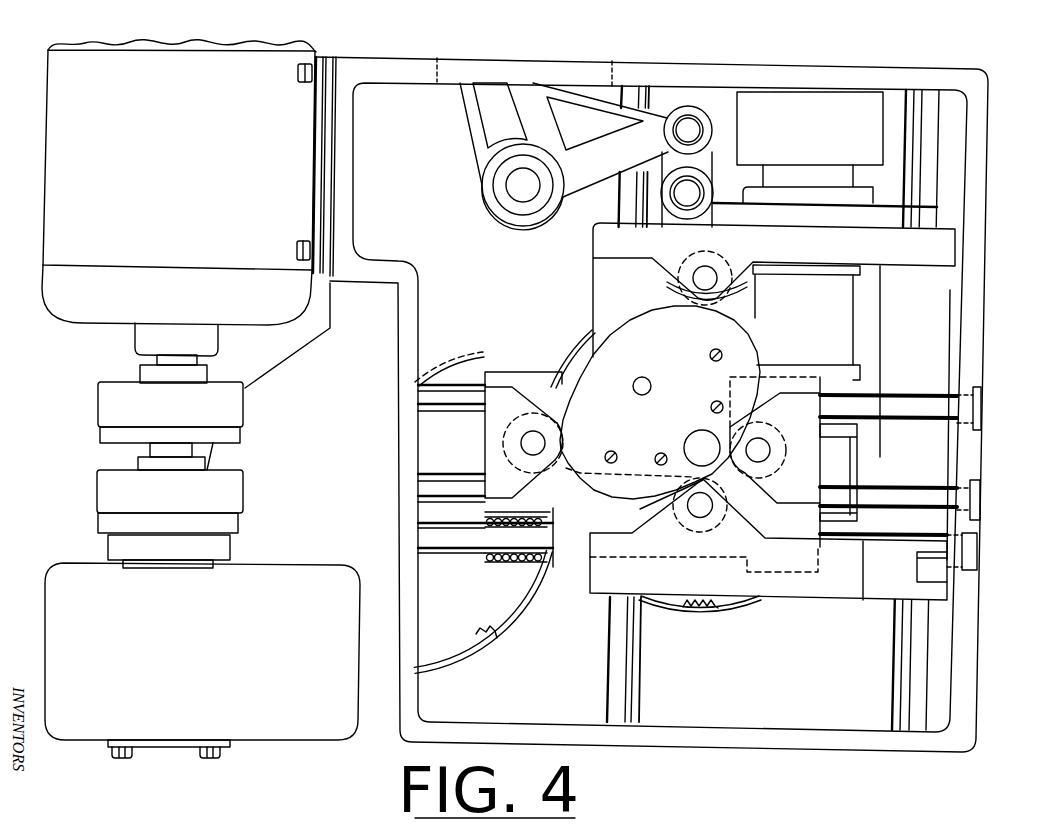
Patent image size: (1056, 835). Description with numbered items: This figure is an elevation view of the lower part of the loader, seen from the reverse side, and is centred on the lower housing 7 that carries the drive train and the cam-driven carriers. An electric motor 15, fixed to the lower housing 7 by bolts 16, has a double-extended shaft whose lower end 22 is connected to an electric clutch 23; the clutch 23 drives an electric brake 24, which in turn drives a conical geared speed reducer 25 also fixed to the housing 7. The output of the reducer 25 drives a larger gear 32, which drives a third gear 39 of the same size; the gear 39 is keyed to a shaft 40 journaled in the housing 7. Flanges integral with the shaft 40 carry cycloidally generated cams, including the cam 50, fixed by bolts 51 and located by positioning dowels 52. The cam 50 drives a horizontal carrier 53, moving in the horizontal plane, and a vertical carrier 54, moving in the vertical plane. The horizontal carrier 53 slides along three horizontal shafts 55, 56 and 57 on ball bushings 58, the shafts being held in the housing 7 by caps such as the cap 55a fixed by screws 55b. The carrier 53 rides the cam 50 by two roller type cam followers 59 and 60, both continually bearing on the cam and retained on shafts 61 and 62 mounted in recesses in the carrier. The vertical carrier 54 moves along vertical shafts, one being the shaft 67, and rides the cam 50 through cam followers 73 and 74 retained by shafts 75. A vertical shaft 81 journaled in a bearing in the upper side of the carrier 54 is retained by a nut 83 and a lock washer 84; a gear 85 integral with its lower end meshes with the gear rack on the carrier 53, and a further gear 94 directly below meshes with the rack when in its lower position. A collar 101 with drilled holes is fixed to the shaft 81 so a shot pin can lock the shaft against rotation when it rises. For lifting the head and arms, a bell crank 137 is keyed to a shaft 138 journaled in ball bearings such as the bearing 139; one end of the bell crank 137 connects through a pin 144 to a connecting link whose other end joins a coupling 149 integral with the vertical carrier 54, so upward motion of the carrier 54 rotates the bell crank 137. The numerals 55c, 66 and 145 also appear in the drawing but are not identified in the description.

The lower housing 7 is at (780, 730).
The electric motor 15 is at (181, 170).
The bolts 16 is at (297, 73).
The lower end of motor shaft 22 is at (200, 360).
The electric clutch 23 is at (110, 382).
The electric brake 24 is at (245, 490).
The conical geared speed reducer 25 is at (179, 655).
The larger gear 32 is at (492, 640).
The third gear 39 is at (686, 606).
The shaft 40 is at (689, 437).
The cycloidally generated cam 50 is at (760, 348).
The bolts 51 is at (659, 456).
The positioning dowels 52 is at (649, 382).
The horizontal carrier 53 is at (502, 372).
The vertical carrier 54 is at (593, 259).
The horizontal shaft 55 is at (902, 392).
The cap 55a is at (982, 428).
The screws 55b is at (982, 506).
The rod bracket 55c is at (977, 553).
The horizontal shaft 56 is at (901, 490).
The horizontal shaft 57 is at (938, 531).
The ball bushings 58 is at (484, 556).
The roller type cam follower 59 is at (760, 413).
The roller type cam follower 60 is at (556, 418).
The shaft 61 is at (763, 452).
The shaft 62 is at (529, 436).
The frame column 66 is at (948, 233).
The vertical shaft 67 is at (618, 100).
The cam follower 73 is at (768, 539).
The cam follower 74 is at (718, 302).
The shafts 75 is at (708, 271).
The vertical shaft 81 is at (855, 322).
The nut 83 is at (833, 187).
The lock washer 84 is at (887, 190).
The gear 85 is at (862, 380).
The gear 94 is at (857, 455).
The collar 101 is at (821, 131).
The bell crank 137 is at (467, 122).
The shaft 138 is at (522, 203).
The ball bearing 139 is at (500, 196).
The pin 144 is at (742, 141).
The bushing 145 is at (742, 115).
The coupling 149 is at (657, 222).